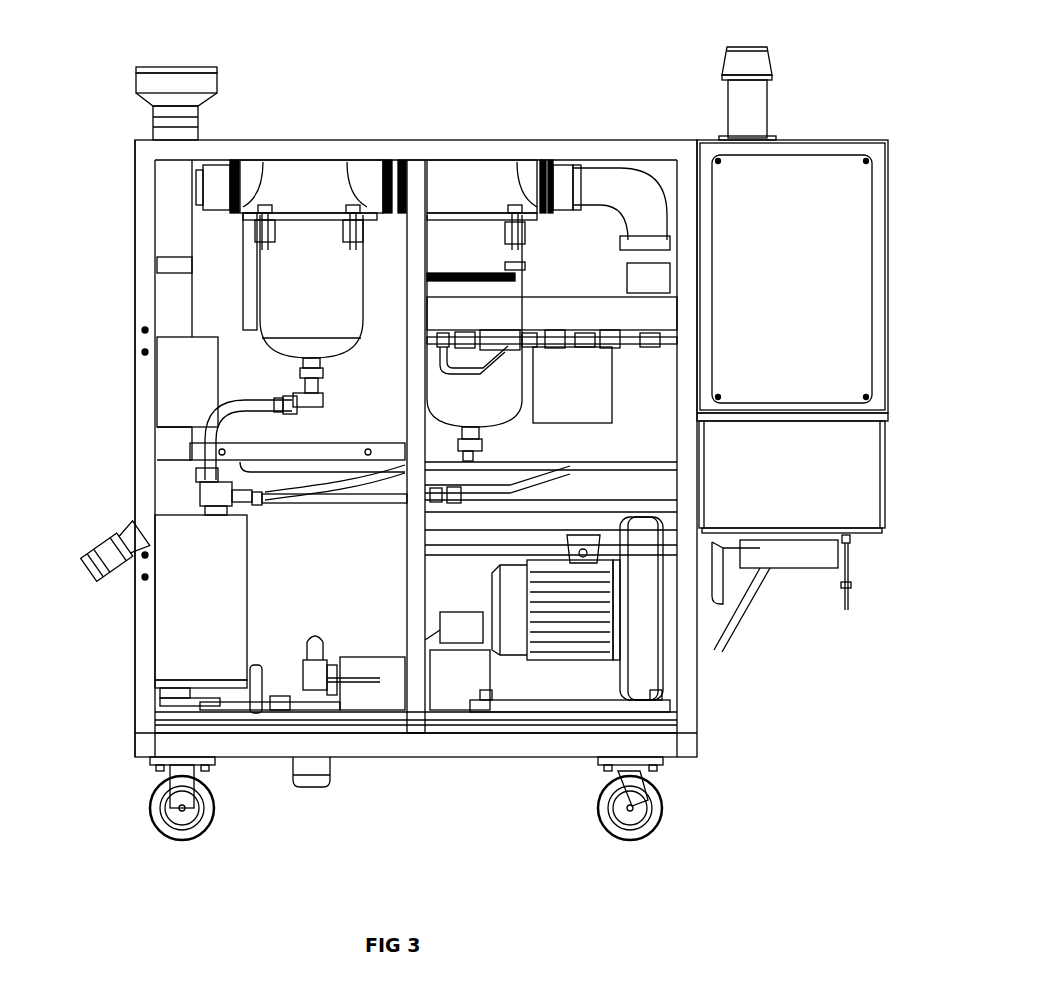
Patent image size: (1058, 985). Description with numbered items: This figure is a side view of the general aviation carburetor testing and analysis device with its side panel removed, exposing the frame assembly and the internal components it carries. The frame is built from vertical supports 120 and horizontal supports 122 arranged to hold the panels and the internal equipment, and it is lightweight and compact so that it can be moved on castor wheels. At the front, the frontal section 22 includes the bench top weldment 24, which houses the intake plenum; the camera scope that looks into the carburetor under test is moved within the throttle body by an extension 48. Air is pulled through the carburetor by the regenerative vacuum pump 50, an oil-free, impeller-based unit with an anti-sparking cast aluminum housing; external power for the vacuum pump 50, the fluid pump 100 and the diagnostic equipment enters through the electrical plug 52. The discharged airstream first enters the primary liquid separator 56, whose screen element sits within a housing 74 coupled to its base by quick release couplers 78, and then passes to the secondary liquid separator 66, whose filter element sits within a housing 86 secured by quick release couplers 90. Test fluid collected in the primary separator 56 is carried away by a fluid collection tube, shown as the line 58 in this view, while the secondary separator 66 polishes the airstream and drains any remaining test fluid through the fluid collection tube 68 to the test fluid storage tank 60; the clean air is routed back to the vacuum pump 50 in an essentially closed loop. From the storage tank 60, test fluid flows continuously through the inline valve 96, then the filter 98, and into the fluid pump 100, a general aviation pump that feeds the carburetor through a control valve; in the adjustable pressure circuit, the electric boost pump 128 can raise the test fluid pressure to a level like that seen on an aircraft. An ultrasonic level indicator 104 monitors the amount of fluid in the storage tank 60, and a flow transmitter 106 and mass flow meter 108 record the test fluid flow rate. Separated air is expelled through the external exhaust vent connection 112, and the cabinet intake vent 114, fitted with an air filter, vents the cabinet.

The frontal section 22 is at (698, 692).
The bench top weldment 24 is at (886, 470).
The extension 48 is at (850, 580).
The regenerative vacuum pump 50 is at (637, 613).
The electrical plug 52 is at (92, 563).
The primary liquid separator 56 is at (477, 188).
The fluid line 58 is at (392, 475).
The test fluid storage tank 60 is at (178, 634).
The secondary liquid separator 66 is at (315, 190).
The fluid collection tube 68 is at (264, 407).
The housing 74 is at (512, 420).
The quick release couplers 78 is at (516, 286).
The housing 86 is at (258, 342).
The quick release couplers 90 is at (255, 242).
The inline valve 96 is at (257, 712).
The filter 98 is at (313, 788).
The fluid pump 100 is at (328, 690).
The ultrasonic level indicator 104 is at (205, 486).
The flow transmitter 106 is at (178, 396).
The mass flow meter 108 is at (580, 395).
The external exhaust vent connection 112 is at (180, 66).
The cabinet intake vent 114 is at (746, 47).
The vertical supports 120 is at (147, 200).
The horizontal supports 122 is at (447, 757).
The electric boost pump 128 is at (505, 336).